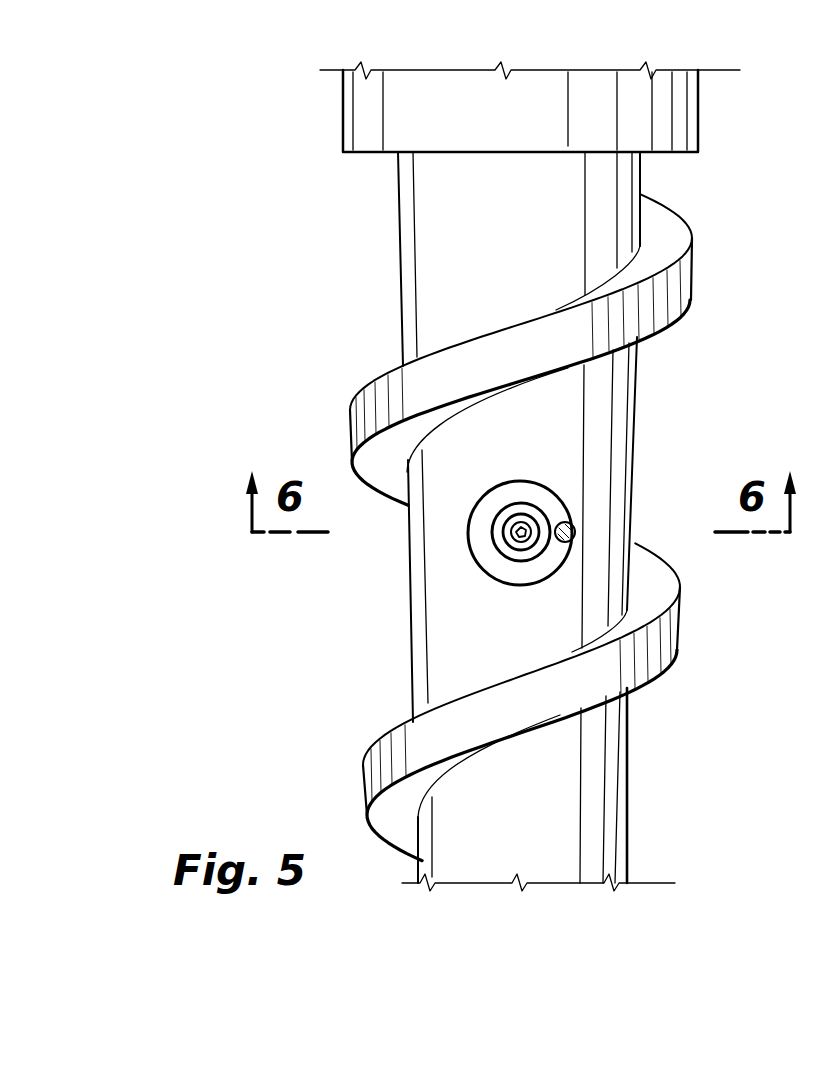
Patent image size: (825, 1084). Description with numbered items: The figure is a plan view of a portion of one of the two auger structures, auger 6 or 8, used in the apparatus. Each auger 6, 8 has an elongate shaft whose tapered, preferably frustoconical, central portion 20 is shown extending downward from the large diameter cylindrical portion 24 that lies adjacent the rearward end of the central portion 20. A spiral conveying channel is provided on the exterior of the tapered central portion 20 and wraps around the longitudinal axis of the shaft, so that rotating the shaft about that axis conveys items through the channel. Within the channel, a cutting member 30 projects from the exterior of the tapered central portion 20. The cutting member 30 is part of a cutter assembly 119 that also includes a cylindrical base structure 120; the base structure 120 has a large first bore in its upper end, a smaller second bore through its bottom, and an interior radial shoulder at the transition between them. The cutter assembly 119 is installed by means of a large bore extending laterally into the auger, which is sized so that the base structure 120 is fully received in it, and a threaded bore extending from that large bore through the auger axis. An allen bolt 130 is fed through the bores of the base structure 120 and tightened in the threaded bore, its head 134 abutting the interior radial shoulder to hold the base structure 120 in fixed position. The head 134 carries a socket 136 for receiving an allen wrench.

The auger 6 is at (472, 521).
The auger 8 is at (472, 521).
The tapered central portion 20 is at (440, 312).
The large diameter cylindrical portion 24 is at (660, 128).
The cutting member 30 is at (560, 524).
The cutter assembly 119 is at (474, 531).
The cylindrical base structure 120 is at (531, 490).
The allen bolt 130 is at (407, 579).
The head 134 is at (504, 552).
The socket 136 is at (521, 536).